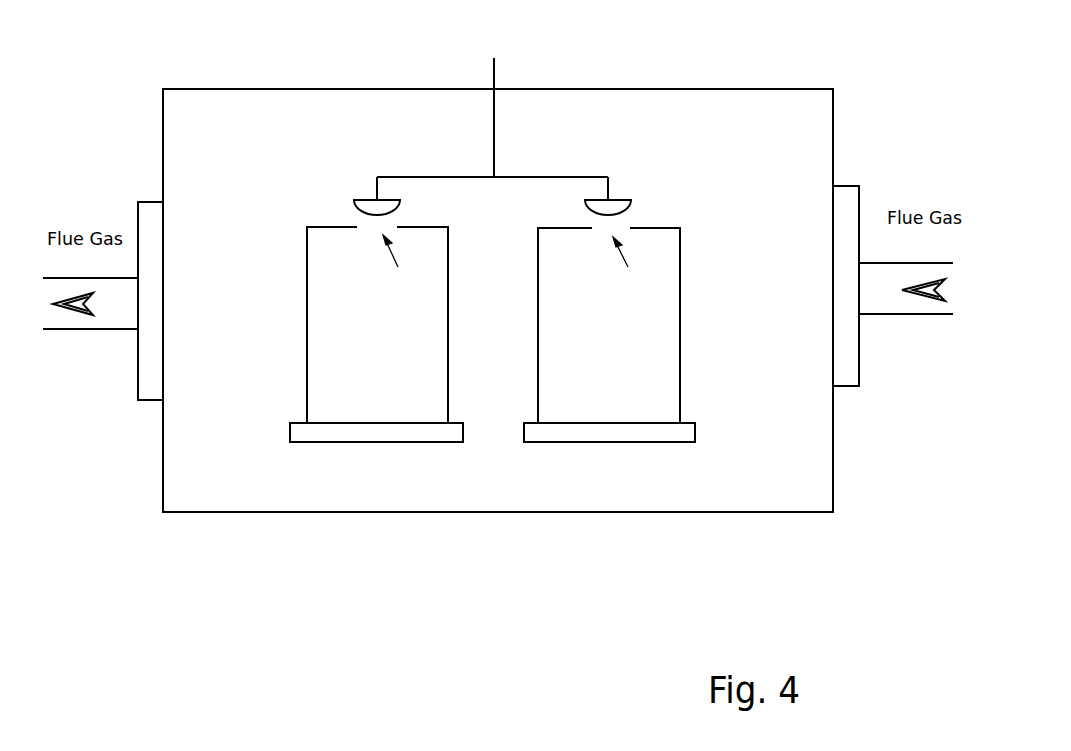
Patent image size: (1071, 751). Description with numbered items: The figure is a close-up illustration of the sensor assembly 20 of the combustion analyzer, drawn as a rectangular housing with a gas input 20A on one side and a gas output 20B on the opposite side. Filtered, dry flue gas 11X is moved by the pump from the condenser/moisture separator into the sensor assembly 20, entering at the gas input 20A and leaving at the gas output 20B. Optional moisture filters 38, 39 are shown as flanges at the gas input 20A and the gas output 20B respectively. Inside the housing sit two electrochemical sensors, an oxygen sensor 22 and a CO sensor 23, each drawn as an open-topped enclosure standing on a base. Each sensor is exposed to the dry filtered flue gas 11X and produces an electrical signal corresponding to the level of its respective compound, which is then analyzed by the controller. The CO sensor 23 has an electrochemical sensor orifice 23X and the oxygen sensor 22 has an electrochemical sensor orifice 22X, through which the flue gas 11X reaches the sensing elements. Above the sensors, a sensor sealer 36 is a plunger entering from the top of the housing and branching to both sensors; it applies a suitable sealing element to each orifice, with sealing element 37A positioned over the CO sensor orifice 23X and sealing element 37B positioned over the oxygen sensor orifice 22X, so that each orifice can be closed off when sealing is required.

The sensor assembly 20 is at (503, 262).
The gas input 20A is at (815, 293).
The gas output 20B is at (183, 307).
The dry filtered flue gas 11X is at (928, 264).
The oxygen sensor 22 is at (652, 332).
The electrochemical sensor orifice 22X is at (633, 263).
The CO sensor 23 is at (331, 334).
The electrochemical sensor orifice 23X is at (404, 263).
The sensor sealer 36 is at (492, 129).
The sealing element 37A is at (411, 202).
The sealing element 37B is at (642, 202).
The moisture filter 38 is at (865, 312).
The moisture filter 39 is at (136, 329).